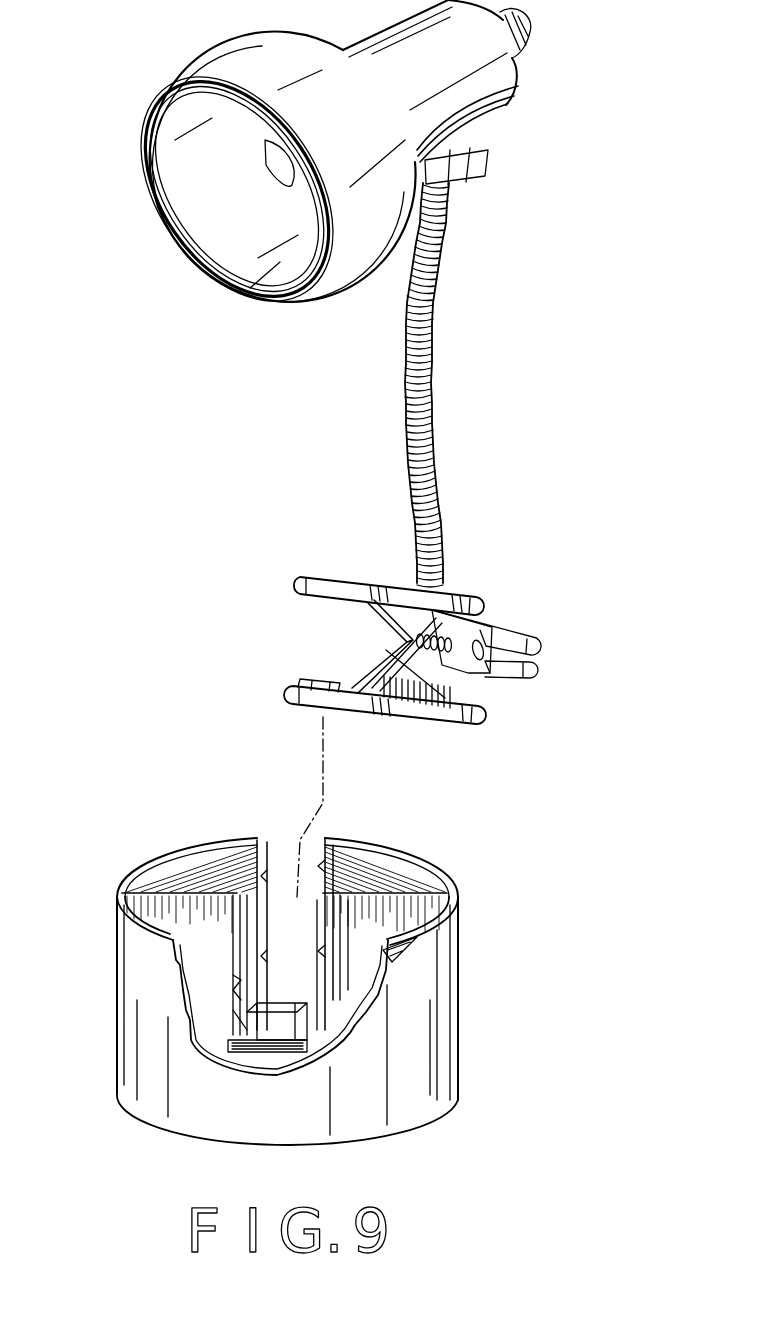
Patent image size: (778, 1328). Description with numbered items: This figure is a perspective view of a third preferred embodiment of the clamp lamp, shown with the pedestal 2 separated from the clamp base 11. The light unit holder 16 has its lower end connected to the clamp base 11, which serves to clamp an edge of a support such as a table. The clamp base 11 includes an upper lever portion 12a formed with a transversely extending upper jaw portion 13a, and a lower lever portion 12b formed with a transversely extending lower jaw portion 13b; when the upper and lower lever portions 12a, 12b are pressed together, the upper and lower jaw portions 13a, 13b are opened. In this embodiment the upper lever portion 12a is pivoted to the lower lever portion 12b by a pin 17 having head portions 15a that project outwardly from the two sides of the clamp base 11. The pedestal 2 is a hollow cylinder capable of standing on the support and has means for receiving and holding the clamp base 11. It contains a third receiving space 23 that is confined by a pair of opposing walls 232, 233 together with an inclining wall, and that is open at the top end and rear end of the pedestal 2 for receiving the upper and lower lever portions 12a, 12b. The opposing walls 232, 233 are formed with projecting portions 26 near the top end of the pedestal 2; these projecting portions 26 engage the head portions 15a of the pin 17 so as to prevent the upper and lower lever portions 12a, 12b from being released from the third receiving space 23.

The pedestal 2 is at (290, 964).
The clamp base 11 is at (440, 633).
The upper lever portion 12a is at (520, 622).
The lower lever portion 12b is at (500, 687).
The upper jaw portion 13a is at (310, 580).
The lower jaw portion 13b is at (453, 727).
The head portions 15a is at (508, 693).
The light unit holder 16 is at (455, 388).
The pin 17 is at (390, 650).
The third receiving space 23 is at (291, 895).
The projecting portions 26 is at (272, 875).
The opposing wall 232 is at (298, 1000).
The opposing wall 233 is at (236, 978).